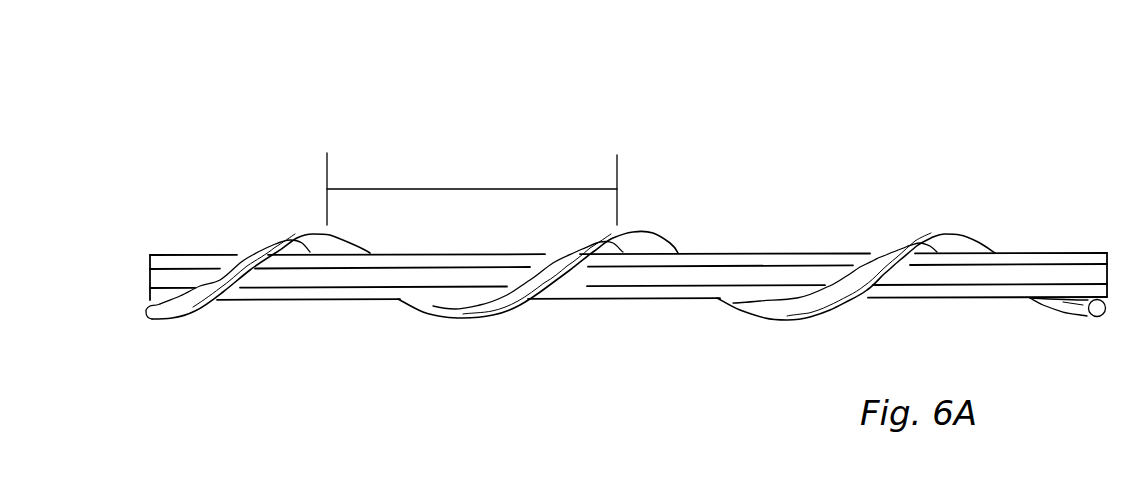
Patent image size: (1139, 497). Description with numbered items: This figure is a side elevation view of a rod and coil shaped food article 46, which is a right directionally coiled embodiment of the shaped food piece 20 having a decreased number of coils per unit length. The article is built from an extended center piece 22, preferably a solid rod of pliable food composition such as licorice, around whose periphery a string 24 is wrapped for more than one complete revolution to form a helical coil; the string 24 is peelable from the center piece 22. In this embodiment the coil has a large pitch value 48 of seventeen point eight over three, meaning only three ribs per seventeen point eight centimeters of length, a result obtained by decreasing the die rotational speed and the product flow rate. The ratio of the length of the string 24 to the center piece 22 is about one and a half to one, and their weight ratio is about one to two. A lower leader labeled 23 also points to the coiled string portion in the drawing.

The shaped food piece 20 is at (151, 216).
The center piece 22 is at (748, 245).
The rod and coil shaped food article 46 is at (238, 245).
The pitch value 48 is at (414, 189).
The wire 23 is at (467, 318).
The string 24 is at (168, 318).